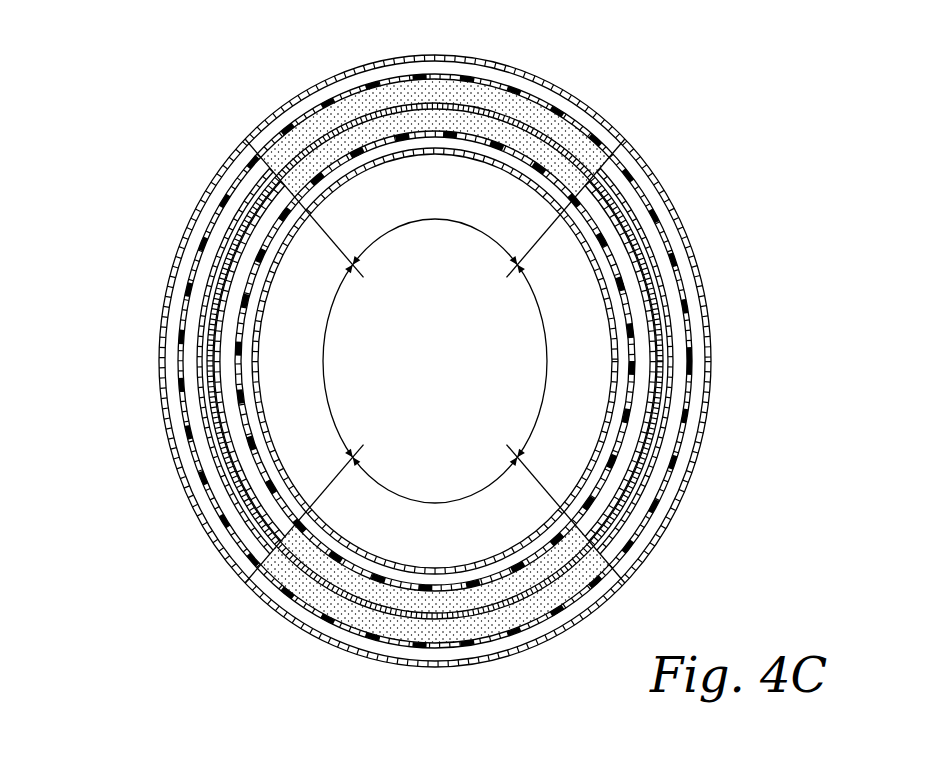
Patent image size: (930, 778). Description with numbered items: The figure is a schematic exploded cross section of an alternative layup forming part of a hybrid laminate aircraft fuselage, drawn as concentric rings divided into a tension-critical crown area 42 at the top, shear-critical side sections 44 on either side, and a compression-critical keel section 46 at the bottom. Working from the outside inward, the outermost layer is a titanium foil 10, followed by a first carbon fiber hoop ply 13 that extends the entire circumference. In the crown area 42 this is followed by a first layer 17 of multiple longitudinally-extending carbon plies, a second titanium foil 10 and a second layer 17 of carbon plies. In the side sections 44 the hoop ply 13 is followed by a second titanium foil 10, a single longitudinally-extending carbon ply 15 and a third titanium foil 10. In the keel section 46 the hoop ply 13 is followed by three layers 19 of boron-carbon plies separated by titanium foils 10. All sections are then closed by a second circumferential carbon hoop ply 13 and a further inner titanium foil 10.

The titanium foil 10 is at (293, 100).
The carbon fiber hoop ply 13 is at (330, 102).
The longitudinally-extending carbon ply 15 is at (263, 530).
The layer of multiple longitudinally-extending carbon plies 17 is at (368, 100).
The layer of multiple boron-carbon plies 19 is at (300, 567).
The crown area 42 is at (612, 45).
The side sections 44 is at (120, 248).
The keel section 46 is at (546, 685).